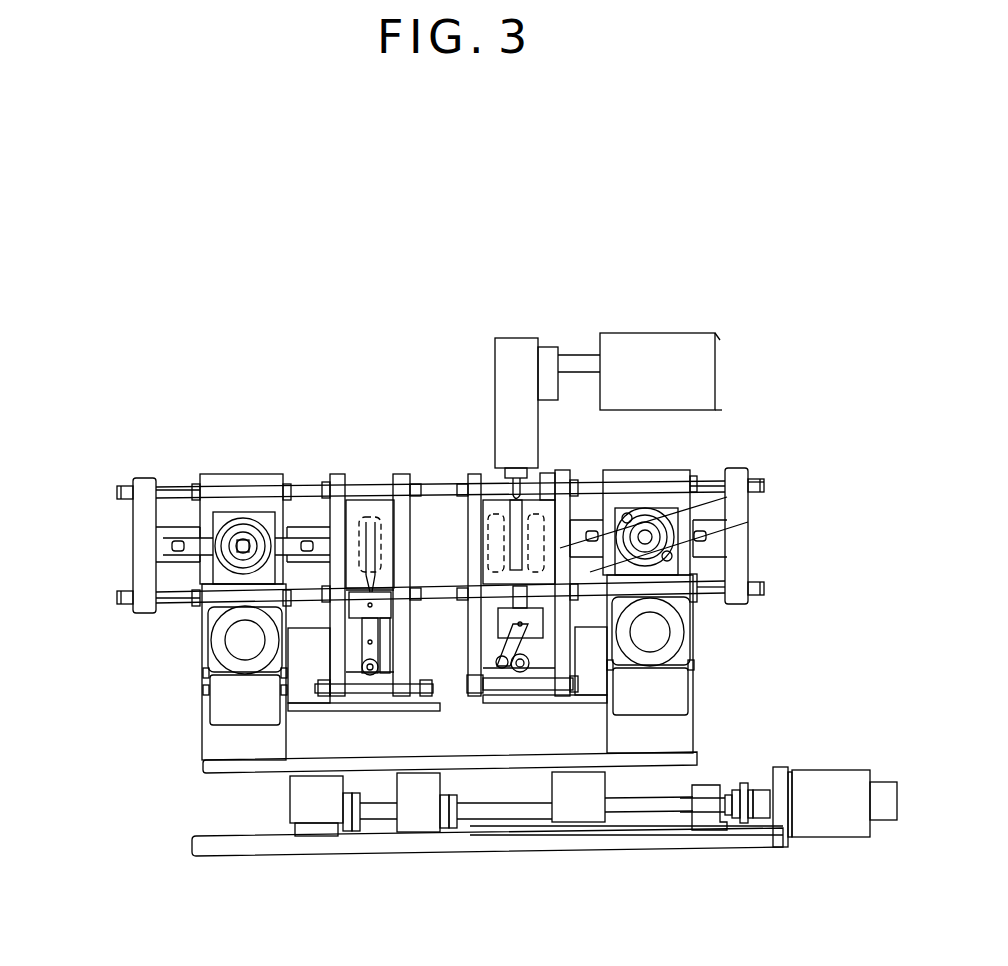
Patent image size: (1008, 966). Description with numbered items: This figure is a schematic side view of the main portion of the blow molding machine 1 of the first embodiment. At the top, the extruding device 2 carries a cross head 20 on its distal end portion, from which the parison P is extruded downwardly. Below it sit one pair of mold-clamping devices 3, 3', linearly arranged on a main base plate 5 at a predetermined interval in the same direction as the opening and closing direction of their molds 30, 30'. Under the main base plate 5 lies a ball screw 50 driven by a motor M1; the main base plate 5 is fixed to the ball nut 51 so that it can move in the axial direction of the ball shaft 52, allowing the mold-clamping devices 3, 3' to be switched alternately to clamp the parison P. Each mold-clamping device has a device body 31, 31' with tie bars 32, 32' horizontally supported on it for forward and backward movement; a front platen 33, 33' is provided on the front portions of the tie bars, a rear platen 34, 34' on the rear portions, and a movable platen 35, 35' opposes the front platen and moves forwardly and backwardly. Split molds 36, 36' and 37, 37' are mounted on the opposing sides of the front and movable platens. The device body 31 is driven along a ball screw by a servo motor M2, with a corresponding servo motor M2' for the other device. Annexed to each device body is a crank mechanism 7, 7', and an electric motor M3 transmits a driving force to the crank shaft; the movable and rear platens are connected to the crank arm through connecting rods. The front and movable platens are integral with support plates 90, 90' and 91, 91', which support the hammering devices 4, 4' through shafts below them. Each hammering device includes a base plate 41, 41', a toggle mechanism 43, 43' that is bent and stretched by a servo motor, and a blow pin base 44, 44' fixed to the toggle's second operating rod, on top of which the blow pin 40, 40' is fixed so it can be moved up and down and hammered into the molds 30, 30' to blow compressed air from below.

The blow molding machine 1 is at (476, 306).
The extruding device 2 is at (642, 345).
The cross head 20 is at (515, 388).
The parison P is at (521, 478).
The mold-clamping device 3 is at (728, 664).
The mold-clamping device 3' is at (169, 672).
The hammering device 4 is at (501, 696).
The hammering device 4' is at (394, 695).
The main base plate 5 is at (330, 763).
The crank mechanism 7 is at (654, 494).
The crank mechanism 7' is at (243, 489).
The mold 30 is at (466, 491).
The mold 30' is at (323, 493).
The device body 31 is at (688, 481).
The device body 31' is at (241, 491).
The tie bars 32 is at (771, 498).
The tie bars 32' is at (136, 539).
The front platen 33 is at (453, 585).
The front platen 33' is at (433, 585).
The rear platen 34 is at (796, 530).
The rear platen 34' is at (94, 545).
The movable platen 35 is at (598, 560).
The movable platen 35' is at (318, 585).
The split mold 36 is at (488, 497).
The split mold 36' is at (341, 483).
The split mold 37 is at (477, 481).
The split mold 37' is at (343, 507).
The blow pin 40 is at (476, 615).
The blow pin 40' is at (410, 575).
The base plate 41 is at (540, 647).
The base plate 41' is at (362, 716).
The toggle mechanism 43 is at (524, 676).
The toggle mechanism 43' is at (343, 650).
The blow pin base 44 is at (485, 641).
The blow pin base 44' is at (344, 624).
The ball screw 50 is at (495, 914).
The ball nut 51 is at (415, 795).
The ball shaft 52 is at (481, 812).
The support plate 90 is at (531, 713).
The support plate 90' is at (364, 730).
The support plate 91 is at (581, 691).
The support plate 91' is at (336, 692).
The motor M1 is at (807, 773).
The servo motor M2 is at (703, 659).
The servo motor M2' is at (197, 675).
The electric motor M3 is at (760, 478).